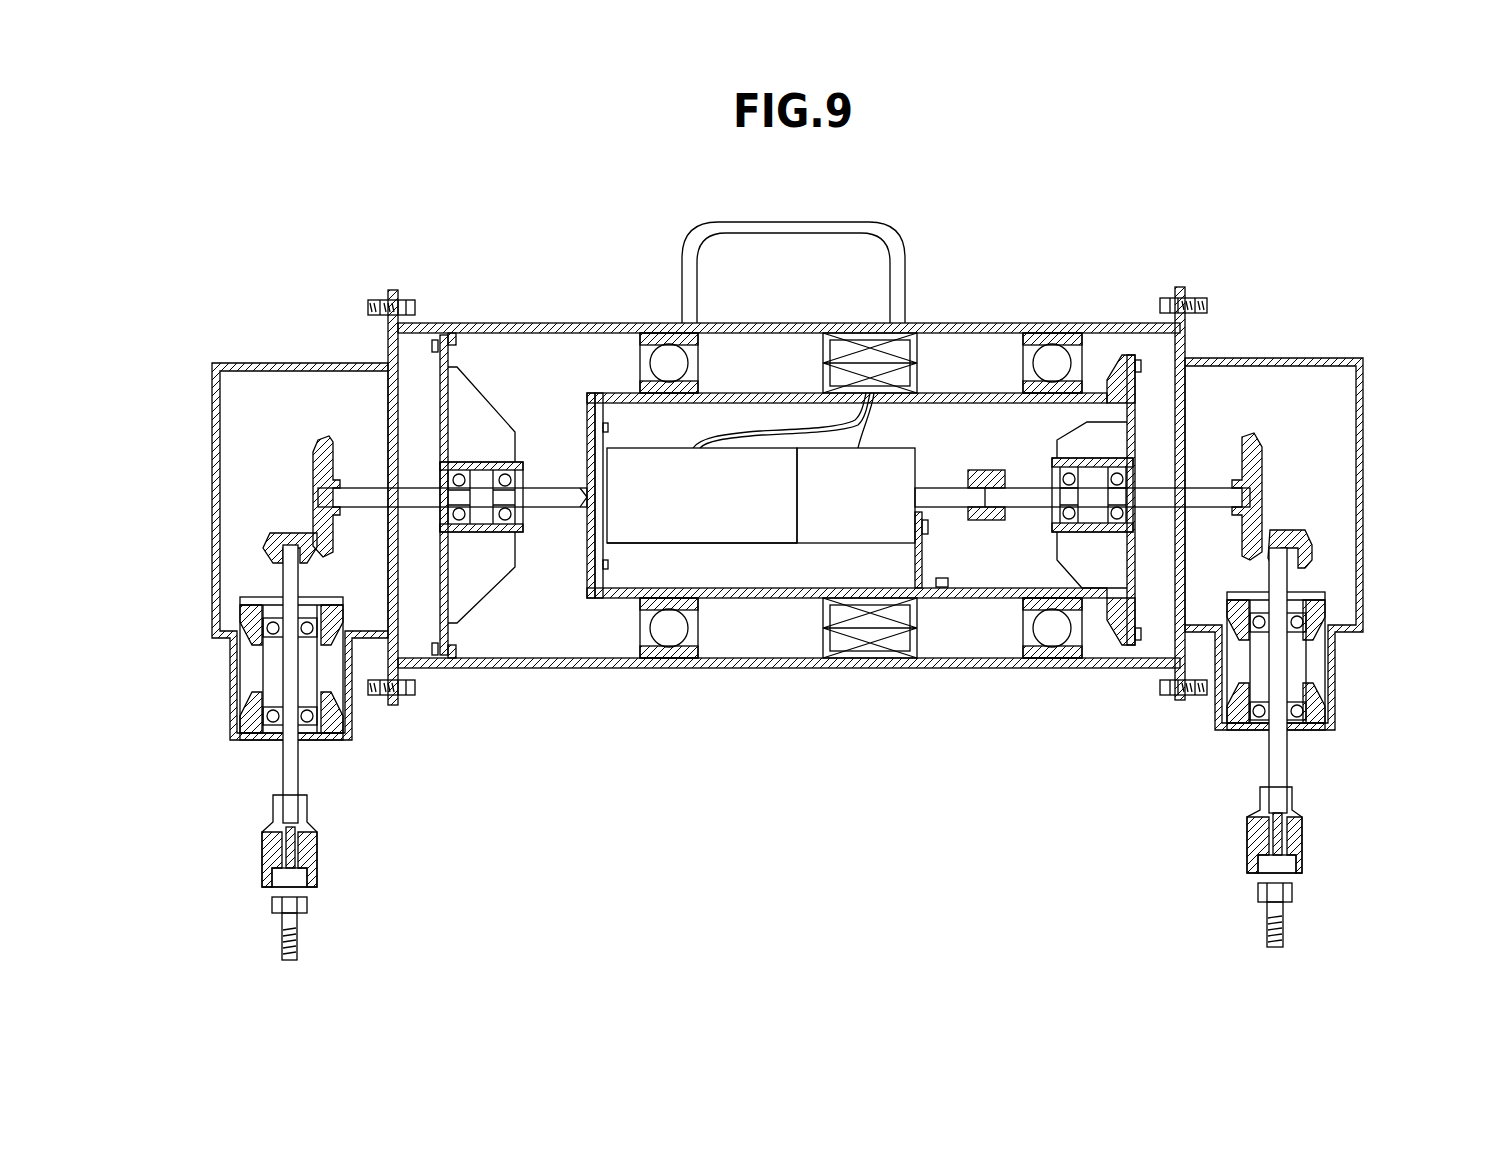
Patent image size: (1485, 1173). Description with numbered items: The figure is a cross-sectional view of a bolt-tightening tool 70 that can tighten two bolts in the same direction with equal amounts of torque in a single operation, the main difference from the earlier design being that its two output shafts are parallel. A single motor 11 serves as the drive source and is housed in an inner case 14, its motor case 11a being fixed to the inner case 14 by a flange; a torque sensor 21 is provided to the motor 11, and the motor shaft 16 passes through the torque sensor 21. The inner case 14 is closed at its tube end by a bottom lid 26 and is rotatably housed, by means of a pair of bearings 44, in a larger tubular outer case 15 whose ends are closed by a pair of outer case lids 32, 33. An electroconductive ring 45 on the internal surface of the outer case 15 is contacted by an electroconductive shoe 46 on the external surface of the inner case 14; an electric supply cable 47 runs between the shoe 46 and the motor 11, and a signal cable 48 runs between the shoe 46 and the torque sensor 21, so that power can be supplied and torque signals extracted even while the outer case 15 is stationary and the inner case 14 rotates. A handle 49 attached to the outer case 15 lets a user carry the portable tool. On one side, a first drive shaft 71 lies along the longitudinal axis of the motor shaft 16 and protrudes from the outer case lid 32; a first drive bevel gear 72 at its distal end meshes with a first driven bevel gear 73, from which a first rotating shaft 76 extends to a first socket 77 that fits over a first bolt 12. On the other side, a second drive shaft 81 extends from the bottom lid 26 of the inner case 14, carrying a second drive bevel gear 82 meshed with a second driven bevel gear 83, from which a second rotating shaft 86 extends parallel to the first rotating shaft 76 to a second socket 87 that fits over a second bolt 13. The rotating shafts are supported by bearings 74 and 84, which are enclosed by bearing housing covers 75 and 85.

The bolt-tightening tool 70 is at (1348, 190).
The outer case 15 is at (911, 318).
The outer case lid 33 is at (386, 348).
The outer case lid 32 is at (1186, 345).
The handle 49 is at (796, 227).
The inner case 14 is at (760, 603).
The bottom lid 26 is at (587, 570).
The bearings 44 is at (640, 345).
The electroconductive ring 45 is at (918, 343).
The electroconductive shoe 46 is at (918, 378).
The motor 11 is at (710, 548).
The motor case 11a is at (728, 575).
The torque sensor 21 is at (843, 546).
The electric supply cable 47 is at (717, 435).
The signal cable 48 is at (870, 447).
The motor shaft 16 is at (990, 522).
The second drive shaft 81 is at (338, 440).
The second drive bevel gear 82 is at (313, 452).
The second driven bevel gear 83 is at (268, 550).
The bearings 84 is at (270, 614).
The bearing housing cover 85 is at (212, 605).
The second rotating shaft 86 is at (282, 762).
The second socket 87 is at (262, 840).
The second bolt 13 is at (272, 905).
The first drive shaft 71 is at (1203, 480).
The first drive bevel gear 72 is at (1260, 450).
The first driven bevel gear 73 is at (1308, 548).
The bearings 74 is at (1297, 612).
The bearing housing cover 75 is at (1363, 595).
The first rotating shaft 76 is at (1290, 762).
The first socket 77 is at (1305, 838).
The first bolt 12 is at (1290, 898).